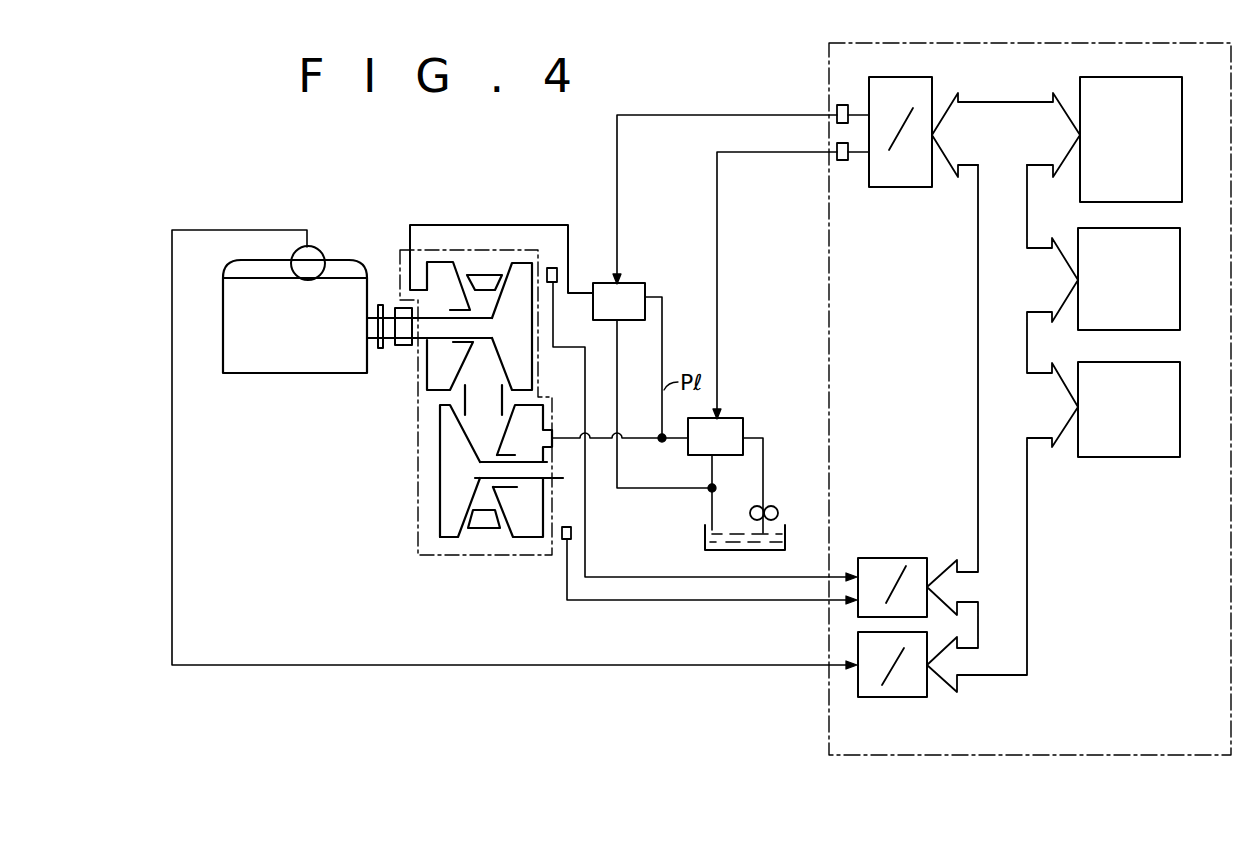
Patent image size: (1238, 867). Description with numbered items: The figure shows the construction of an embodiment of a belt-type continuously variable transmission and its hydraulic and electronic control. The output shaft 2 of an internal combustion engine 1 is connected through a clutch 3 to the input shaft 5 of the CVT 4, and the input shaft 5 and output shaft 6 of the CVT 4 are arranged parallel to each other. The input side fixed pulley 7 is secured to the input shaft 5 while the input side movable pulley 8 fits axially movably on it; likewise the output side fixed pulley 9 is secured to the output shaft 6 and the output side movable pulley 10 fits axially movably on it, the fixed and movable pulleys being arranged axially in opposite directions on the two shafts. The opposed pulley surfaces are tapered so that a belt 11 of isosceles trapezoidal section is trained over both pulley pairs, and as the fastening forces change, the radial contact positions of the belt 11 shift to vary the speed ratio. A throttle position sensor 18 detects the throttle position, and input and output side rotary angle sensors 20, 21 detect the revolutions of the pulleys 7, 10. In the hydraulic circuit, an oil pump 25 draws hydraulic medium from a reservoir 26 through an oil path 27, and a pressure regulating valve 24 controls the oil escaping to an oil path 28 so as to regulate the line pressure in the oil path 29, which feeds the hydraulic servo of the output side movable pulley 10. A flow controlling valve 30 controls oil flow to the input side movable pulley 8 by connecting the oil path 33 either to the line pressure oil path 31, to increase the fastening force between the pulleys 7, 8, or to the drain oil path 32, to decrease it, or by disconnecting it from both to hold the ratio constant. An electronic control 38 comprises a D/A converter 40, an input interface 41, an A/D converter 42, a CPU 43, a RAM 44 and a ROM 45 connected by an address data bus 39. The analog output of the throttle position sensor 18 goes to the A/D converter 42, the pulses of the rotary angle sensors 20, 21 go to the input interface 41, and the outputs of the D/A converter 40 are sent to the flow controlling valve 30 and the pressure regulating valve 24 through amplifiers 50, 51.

The internal combustion engine 1 is at (300, 380).
The output shaft 2 is at (368, 326).
The clutch 3 is at (380, 350).
The CVT 4 is at (477, 565).
The input shaft 5 is at (400, 310).
The output shaft 6 is at (560, 472).
The input side fixed pulley 7 is at (527, 265).
The input side movable pulley 8 is at (440, 277).
The output side fixed pulley 9 is at (452, 523).
The output side movable pulley 10 is at (542, 410).
The belt 11 is at (483, 280).
The throttle position sensor 18 is at (302, 258).
The input side rotary angle sensor 20 is at (555, 284).
The output side rotary angle sensor 21 is at (572, 533).
The pressure regulating valve 24 is at (737, 430).
The oil pump 25 is at (774, 507).
The reservoir 26 is at (786, 542).
The oil path 27 is at (767, 450).
The oil path 28 is at (708, 482).
The oil path 29 is at (645, 441).
The flow controlling valve 30 is at (636, 290).
The line pressure oil path 31 is at (665, 348).
The drain oil path 32 is at (618, 400).
The oil path 33 is at (522, 223).
The electronic control 38 is at (1002, 38).
The address data bus 39 is at (997, 353).
The D/A converter 40 is at (902, 175).
The input interface 41 is at (893, 560).
The A/D converter 42 is at (923, 687).
The CPU 43 is at (1165, 103).
The RAM 44 is at (1160, 260).
The ROM 45 is at (1160, 388).
The amplifier 50 is at (843, 104).
The amplifier 51 is at (837, 157).